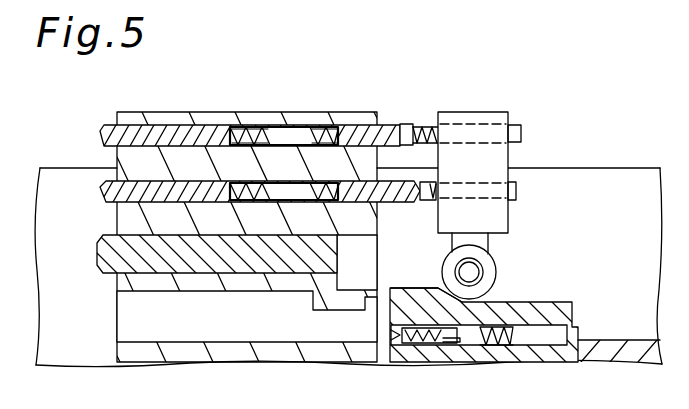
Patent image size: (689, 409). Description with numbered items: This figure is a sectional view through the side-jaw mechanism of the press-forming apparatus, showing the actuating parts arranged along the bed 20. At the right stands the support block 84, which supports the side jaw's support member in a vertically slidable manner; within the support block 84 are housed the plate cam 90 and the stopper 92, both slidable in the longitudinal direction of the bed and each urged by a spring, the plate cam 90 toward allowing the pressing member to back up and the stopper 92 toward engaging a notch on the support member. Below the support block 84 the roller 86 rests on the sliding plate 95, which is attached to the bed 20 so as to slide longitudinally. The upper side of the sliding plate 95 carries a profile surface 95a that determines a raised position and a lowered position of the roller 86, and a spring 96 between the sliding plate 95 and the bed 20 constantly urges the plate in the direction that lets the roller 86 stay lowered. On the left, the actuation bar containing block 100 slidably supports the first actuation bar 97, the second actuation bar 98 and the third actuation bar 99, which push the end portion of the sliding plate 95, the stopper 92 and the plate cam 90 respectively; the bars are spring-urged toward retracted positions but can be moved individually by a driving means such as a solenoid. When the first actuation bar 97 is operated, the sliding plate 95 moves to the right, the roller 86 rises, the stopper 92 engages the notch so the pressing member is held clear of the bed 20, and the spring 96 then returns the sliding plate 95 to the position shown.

The bed 20 is at (583, 348).
The support block 84 is at (480, 115).
The roller 86 is at (490, 270).
The plate cam 90 is at (521, 133).
The stopper 92 is at (516, 195).
The sliding plate 95 is at (502, 327).
The profile surface 95a is at (417, 288).
The spring 96 is at (437, 342).
The first actuation bar 97 is at (110, 255).
The second actuation bar 98 is at (108, 190).
The third actuation bar 99 is at (100, 131).
The actuation bar containing block 100 is at (247, 118).